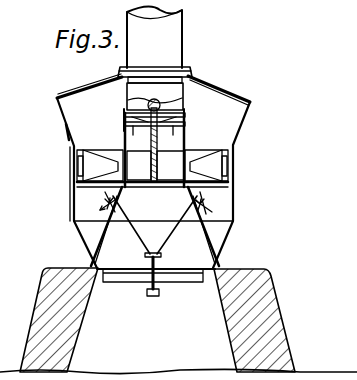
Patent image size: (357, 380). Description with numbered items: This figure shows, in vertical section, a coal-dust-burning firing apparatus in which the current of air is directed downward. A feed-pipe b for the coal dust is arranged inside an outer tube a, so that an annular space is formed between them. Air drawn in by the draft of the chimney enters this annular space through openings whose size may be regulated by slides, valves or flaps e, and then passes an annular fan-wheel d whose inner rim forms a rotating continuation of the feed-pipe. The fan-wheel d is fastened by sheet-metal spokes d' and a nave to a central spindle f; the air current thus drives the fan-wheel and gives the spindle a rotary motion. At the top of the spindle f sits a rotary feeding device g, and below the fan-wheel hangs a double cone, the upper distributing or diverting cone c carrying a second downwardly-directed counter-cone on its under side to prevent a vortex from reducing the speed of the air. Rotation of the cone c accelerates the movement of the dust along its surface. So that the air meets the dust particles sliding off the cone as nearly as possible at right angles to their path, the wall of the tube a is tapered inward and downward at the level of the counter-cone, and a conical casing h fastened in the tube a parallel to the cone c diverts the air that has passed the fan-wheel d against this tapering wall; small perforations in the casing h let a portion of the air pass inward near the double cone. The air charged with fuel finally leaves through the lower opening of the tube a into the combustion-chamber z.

The feed-pipe b is at (154, 37).
The slides, valves or flaps e is at (89, 84).
The rotary feeding device g is at (185, 116).
The spindle f is at (159, 144).
The annular fan-wheel d is at (100, 153).
The spokes d' is at (139, 154).
The tube a is at (153, 183).
The cone c is at (156, 242).
The conical casing h is at (95, 236).
The combustion-chamber z is at (178, 321).